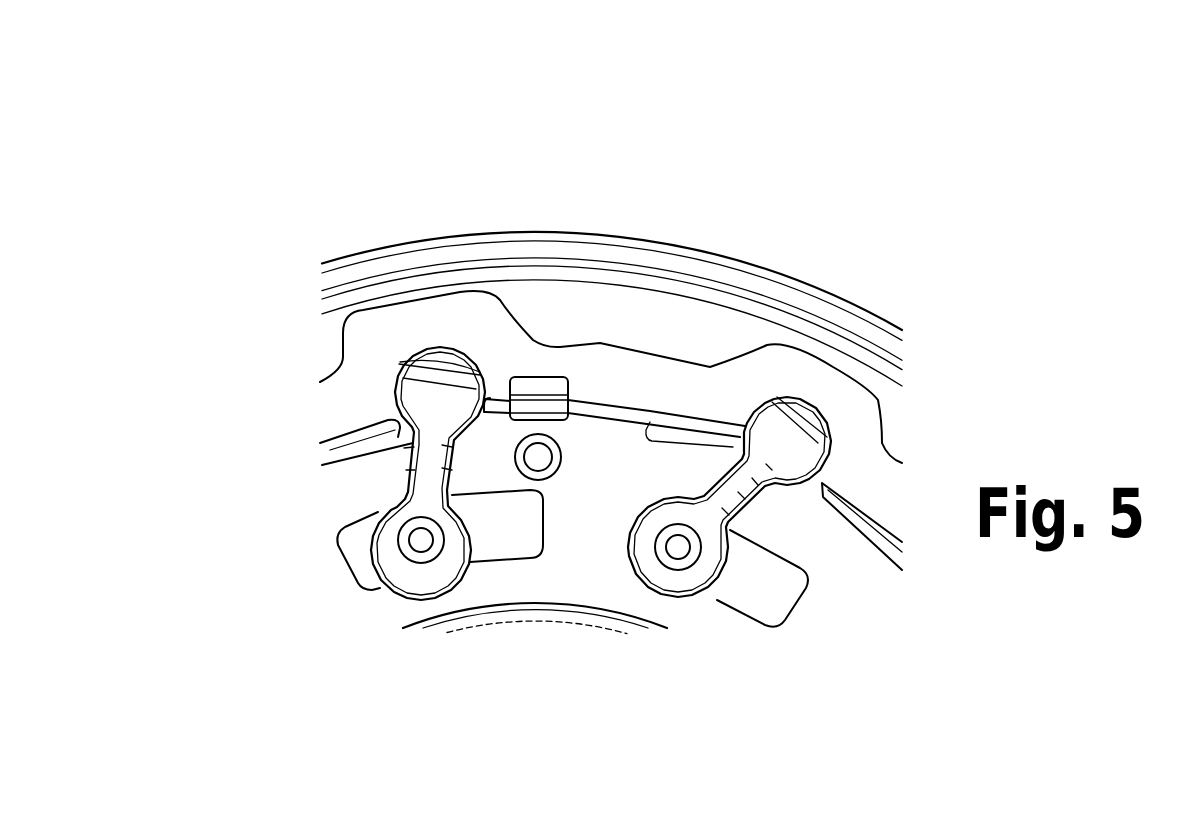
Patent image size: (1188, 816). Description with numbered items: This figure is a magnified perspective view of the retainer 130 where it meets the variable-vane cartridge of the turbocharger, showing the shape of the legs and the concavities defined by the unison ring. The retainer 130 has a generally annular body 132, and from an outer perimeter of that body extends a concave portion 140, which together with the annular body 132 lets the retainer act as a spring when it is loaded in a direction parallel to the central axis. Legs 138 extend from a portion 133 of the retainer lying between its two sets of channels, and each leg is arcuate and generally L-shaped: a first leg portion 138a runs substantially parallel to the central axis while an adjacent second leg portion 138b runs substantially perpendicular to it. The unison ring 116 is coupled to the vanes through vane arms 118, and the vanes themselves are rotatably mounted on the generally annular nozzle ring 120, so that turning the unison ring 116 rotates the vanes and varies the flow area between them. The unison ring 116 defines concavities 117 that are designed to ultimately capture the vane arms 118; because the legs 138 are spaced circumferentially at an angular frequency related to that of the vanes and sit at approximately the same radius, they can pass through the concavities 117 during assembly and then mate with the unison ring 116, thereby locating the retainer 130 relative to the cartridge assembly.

The unison ring 116 is at (342, 357).
The concavities 117 is at (440, 357).
The vane arms 118 is at (398, 593).
The nozzle ring 120 is at (540, 622).
The retainer 130 is at (806, 279).
The annular body 132 is at (572, 545).
The portion of the retainer 133 is at (365, 484).
The legs 138 is at (571, 371).
The first leg portion 138a is at (538, 417).
The second leg portion 138b is at (538, 377).
The concave portion 140 is at (340, 260).